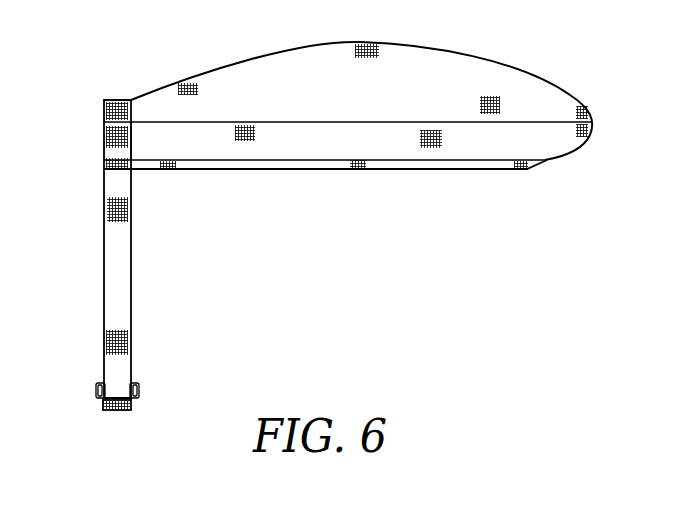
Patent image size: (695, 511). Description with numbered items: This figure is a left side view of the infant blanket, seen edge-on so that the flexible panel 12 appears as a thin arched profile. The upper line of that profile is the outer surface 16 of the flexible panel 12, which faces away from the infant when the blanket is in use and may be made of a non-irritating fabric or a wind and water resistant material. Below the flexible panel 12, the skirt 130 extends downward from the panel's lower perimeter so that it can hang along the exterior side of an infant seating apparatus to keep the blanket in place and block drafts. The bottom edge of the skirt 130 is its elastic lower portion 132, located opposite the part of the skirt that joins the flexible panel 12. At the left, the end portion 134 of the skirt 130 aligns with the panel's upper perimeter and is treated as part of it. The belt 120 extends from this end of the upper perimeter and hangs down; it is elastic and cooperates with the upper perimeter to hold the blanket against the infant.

The flexible panel 12 is at (527, 67).
The outer surface 16 is at (532, 108).
The skirt 130 is at (550, 137).
The elastic lower portion 132 is at (333, 162).
The end portion of skirt 134 is at (145, 150).
The belt 120 is at (102, 273).